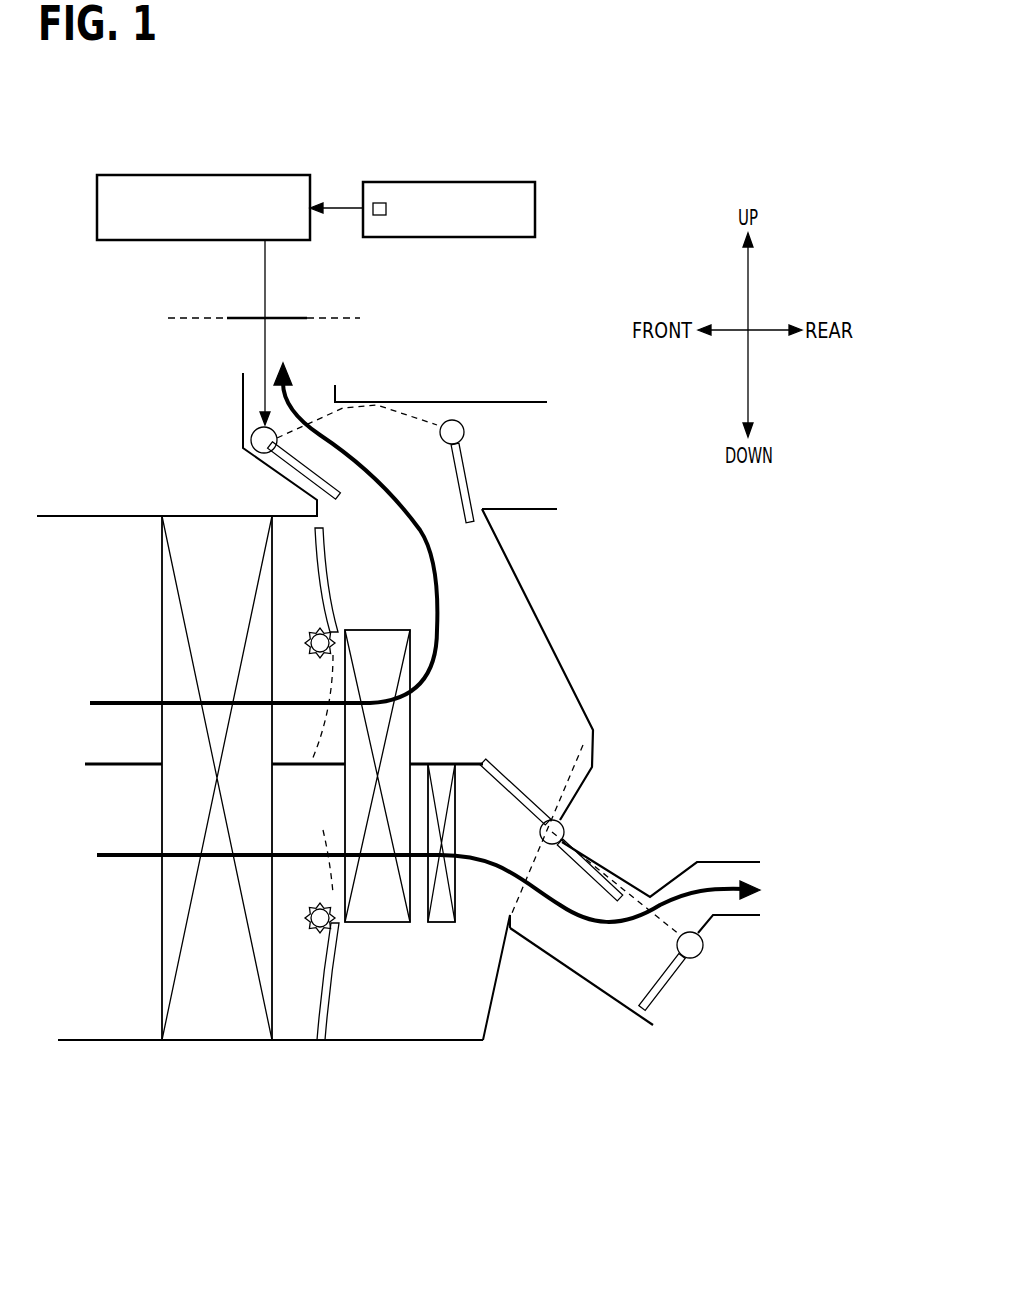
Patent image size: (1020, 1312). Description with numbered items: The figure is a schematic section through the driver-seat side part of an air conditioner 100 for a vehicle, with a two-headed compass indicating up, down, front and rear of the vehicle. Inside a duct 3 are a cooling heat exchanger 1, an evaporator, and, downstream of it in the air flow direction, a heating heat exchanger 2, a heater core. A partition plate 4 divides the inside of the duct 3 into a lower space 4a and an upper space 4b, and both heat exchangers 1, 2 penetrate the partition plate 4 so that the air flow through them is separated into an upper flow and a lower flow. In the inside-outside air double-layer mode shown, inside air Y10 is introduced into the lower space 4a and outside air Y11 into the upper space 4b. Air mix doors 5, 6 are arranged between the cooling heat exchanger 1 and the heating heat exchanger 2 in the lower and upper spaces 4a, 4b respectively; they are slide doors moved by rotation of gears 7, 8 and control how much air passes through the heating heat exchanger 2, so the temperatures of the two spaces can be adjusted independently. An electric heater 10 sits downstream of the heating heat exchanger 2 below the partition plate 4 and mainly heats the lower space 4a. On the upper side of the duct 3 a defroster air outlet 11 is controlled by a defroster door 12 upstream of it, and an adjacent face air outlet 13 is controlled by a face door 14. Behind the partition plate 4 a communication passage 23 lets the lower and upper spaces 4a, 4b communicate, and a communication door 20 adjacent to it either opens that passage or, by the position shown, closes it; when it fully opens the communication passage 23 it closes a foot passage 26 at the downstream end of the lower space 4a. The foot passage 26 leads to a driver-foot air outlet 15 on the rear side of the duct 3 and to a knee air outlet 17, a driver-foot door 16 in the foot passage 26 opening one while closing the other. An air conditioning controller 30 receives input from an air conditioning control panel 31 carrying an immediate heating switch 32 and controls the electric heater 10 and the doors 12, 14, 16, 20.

The cooling heat exchanger 1 is at (160, 633).
The heating heat exchanger 2 is at (377, 903).
The duct 3 is at (130, 513).
The partition plate 4 is at (467, 763).
The lower space 4a is at (482, 905).
The upper space 4b is at (460, 680).
The air mix door 5 is at (327, 987).
The air mix door 6 is at (323, 562).
The gear 7 is at (307, 927).
The gear 8 is at (313, 630).
The electric heater 10 is at (440, 912).
The defroster air outlet 11 is at (310, 387).
The defroster door 12 is at (320, 477).
The face air outlet 13 is at (547, 455).
The face door 14 is at (468, 477).
The driver-foot air outlet 15 is at (680, 987).
The driver-foot door 16 is at (653, 978).
The knee air outlet 17 is at (727, 862).
The communication door 20 is at (518, 790).
The communication passage 23 is at (540, 798).
The foot passage 26 is at (575, 938).
The air conditioning controller 30 is at (97, 187).
The air conditioning control panel 31 is at (535, 190).
The immediate heating switch 32 is at (382, 200).
The air conditioner 100 is at (145, 1088).
The inside air Y10 is at (403, 881).
The outside air Y11 is at (238, 540).